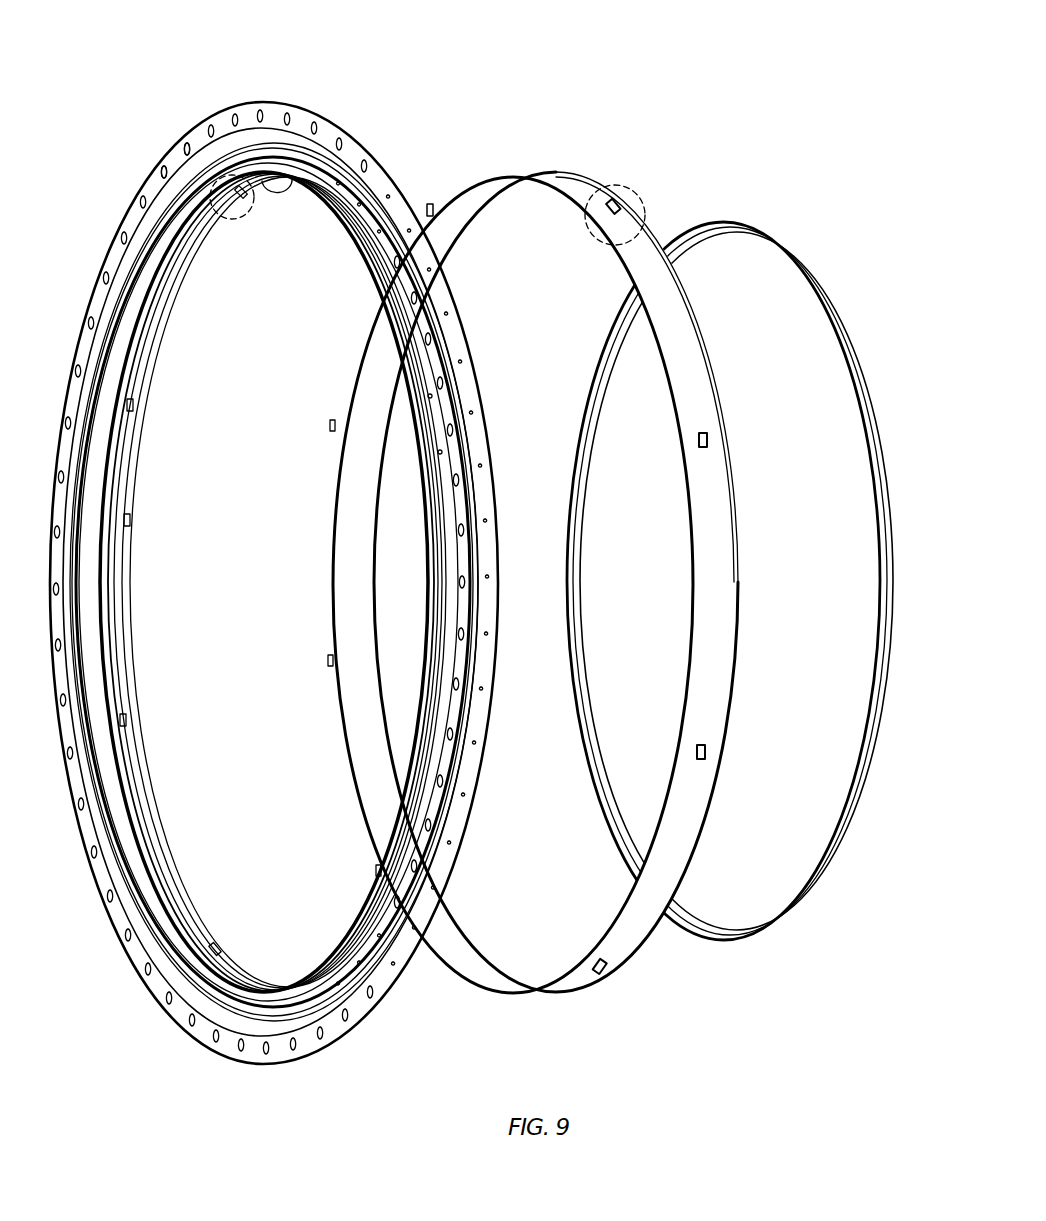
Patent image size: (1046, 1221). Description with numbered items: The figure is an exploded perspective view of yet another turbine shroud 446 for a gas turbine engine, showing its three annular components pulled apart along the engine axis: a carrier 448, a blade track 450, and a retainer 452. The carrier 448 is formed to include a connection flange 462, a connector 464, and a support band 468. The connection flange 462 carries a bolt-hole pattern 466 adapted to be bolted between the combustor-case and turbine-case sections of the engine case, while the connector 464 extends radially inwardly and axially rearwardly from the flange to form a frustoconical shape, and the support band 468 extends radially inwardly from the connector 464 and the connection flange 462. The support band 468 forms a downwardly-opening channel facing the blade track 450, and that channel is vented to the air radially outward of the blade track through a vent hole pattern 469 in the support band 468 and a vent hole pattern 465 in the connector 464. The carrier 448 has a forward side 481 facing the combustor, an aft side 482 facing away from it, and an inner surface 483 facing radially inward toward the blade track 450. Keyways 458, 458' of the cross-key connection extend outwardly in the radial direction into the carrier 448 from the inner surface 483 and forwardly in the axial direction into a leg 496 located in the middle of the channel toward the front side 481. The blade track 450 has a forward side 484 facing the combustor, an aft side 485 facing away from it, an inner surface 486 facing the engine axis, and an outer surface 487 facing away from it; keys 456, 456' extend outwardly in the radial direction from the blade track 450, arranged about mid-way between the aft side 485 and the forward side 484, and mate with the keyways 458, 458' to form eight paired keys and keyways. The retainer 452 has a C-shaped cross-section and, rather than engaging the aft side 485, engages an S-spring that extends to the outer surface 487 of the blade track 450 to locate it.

The turbine shroud 446 is at (148, 93).
The carrier 448 is at (297, 97).
The blade track 450 is at (566, 168).
The retainer 452 is at (750, 216).
The key 456 is at (475, 558).
The key 456' is at (656, 472).
The keyway 458 is at (265, 565).
The keyway 458' is at (337, 543).
The connection flange 462 is at (236, 98).
The connector 464 is at (392, 182).
The vent hole pattern 465 is at (442, 252).
The bolt-hole pattern 466 is at (180, 151).
The support band 468 is at (134, 522).
The vent hole pattern 469 is at (430, 396).
The forward side 481 is at (392, 326).
The aft side 482 is at (270, 178).
The inner surface 483 is at (204, 224).
The forward side 484 is at (622, 270).
The aft side 485 is at (692, 297).
The inner surface 486 is at (660, 378).
The outer surface 487 is at (688, 340).
The leg 496 is at (148, 390).